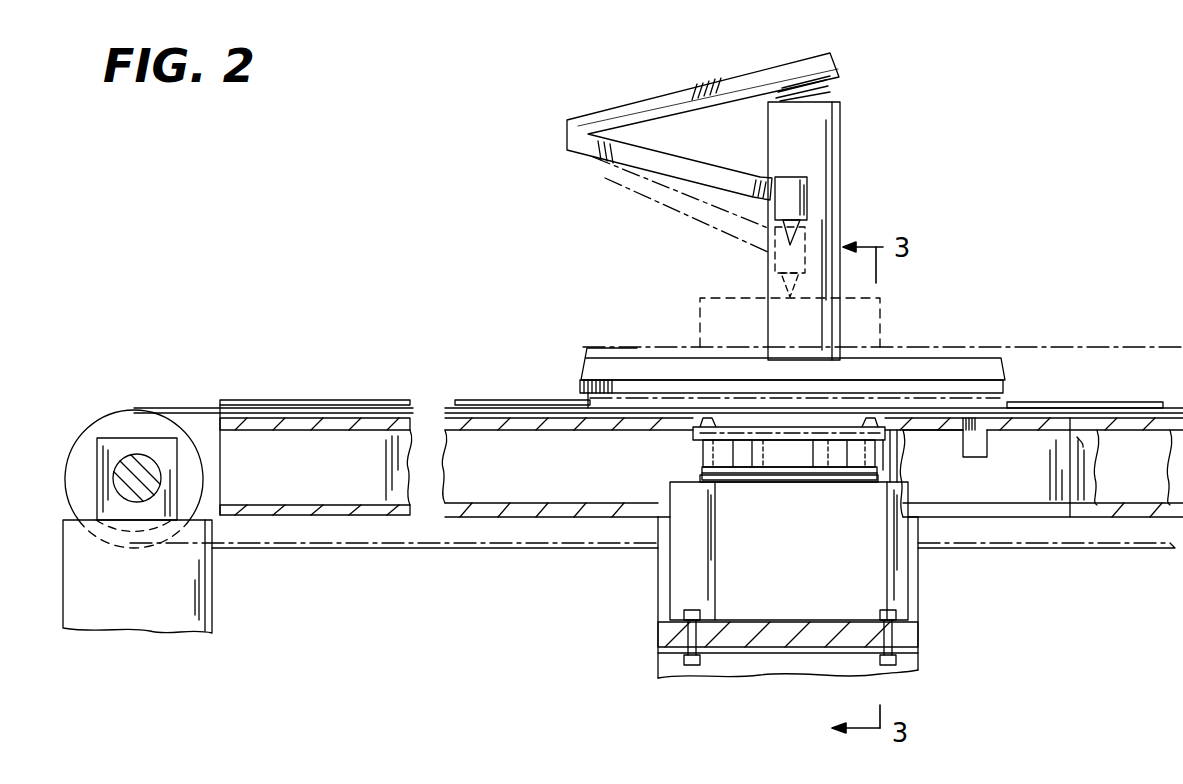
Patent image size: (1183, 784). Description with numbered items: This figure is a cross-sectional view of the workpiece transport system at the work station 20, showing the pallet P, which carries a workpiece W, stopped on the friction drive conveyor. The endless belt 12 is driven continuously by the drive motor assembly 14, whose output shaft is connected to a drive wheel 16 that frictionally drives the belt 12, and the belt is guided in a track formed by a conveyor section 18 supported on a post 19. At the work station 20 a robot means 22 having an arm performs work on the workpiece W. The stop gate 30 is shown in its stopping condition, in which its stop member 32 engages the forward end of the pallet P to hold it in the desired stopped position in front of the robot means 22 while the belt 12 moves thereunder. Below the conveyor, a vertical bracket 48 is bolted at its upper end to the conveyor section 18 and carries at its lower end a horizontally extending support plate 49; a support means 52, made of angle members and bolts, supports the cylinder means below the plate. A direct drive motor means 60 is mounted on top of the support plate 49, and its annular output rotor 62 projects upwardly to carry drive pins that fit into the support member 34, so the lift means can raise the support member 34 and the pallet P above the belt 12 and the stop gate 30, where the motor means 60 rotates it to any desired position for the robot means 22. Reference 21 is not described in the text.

The endless belt 12 is at (203, 406).
The drive motor assembly 14 is at (131, 434).
The drive wheel 16 is at (190, 484).
The conveyor section 18 is at (286, 400).
The post 19 is at (195, 609).
The work station 20 is at (862, 171).
The work station 21 is at (633, 580).
The robot means 22 is at (716, 88).
The stop gate 30 is at (1012, 477).
The stop member 32 is at (999, 407).
The support member 34 is at (692, 433).
The vertical bracket 48 is at (918, 587).
The support plate 49 is at (907, 636).
The support means 52 is at (928, 664).
The direct drive motor means 60 is at (797, 566).
The output rotor 62 is at (790, 483).
The workpiece W is at (700, 296).
The pallet P is at (632, 350).